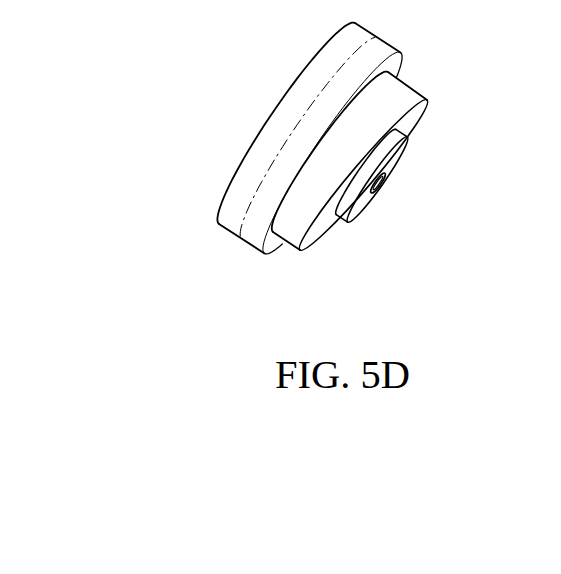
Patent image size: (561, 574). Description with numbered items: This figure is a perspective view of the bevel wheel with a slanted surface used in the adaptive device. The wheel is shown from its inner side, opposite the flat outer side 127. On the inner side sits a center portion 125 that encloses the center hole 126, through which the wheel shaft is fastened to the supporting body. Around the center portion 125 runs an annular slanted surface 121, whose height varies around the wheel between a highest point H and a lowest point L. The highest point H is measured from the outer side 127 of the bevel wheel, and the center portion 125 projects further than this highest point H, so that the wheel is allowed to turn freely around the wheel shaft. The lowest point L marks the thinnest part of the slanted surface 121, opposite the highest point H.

The outer side 127 is at (255, 133).
The slanted surface 121 is at (414, 122).
The center portion 125 is at (392, 165).
The center hole 126 is at (381, 194).
The highest point H is at (427, 100).
The lowest point L is at (298, 252).